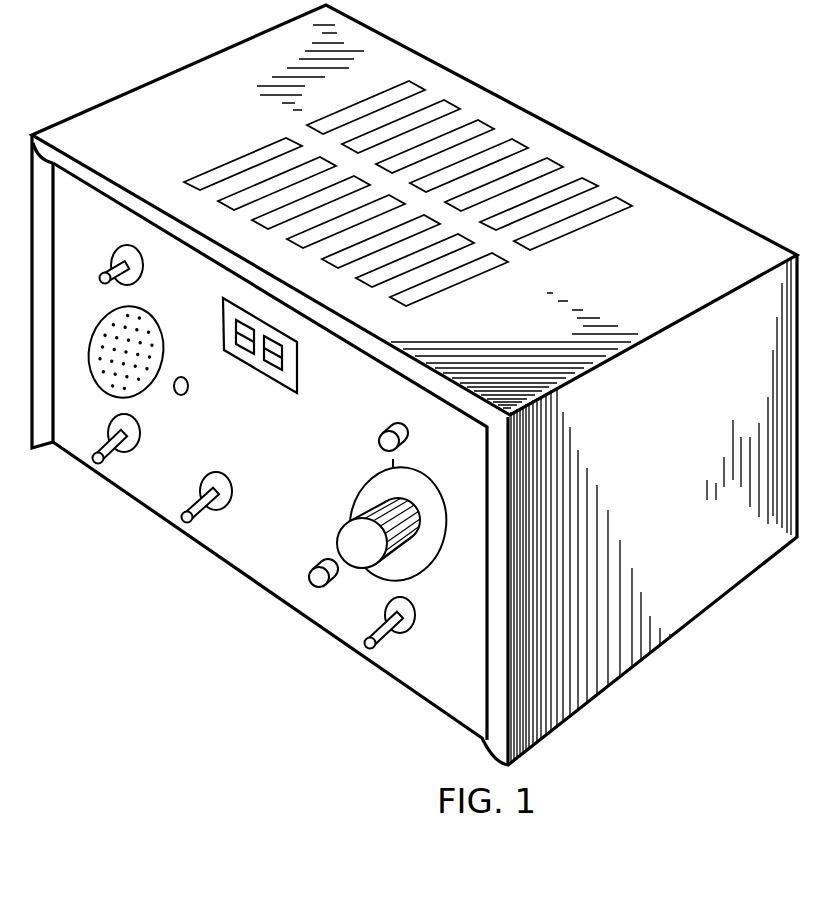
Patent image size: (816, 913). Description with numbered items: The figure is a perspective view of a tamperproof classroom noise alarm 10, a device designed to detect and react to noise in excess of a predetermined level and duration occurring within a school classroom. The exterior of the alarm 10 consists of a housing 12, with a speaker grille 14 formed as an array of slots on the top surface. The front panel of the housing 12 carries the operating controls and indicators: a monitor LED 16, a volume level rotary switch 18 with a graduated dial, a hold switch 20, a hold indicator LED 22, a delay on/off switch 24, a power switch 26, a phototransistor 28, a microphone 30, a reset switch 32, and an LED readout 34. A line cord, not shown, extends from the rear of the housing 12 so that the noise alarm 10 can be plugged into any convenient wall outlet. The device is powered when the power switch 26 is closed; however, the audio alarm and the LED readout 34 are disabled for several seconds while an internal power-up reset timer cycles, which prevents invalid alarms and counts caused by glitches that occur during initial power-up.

The tamperproof classroom noise alarm 10 is at (137, 48).
The housing 12 is at (688, 593).
The speaker grille 14 is at (563, 227).
The monitor LED 16 is at (402, 443).
The volume level rotary switch 18 is at (434, 576).
The hold switch 20 is at (394, 636).
The hold indicator LED 22 is at (327, 586).
The delay on/off switch 24 is at (207, 513).
The power switch 26 is at (121, 455).
The phototransistor 28 is at (185, 395).
The microphone 30 is at (104, 380).
The reset switch 32 is at (131, 284).
The LED readout 34 is at (298, 380).